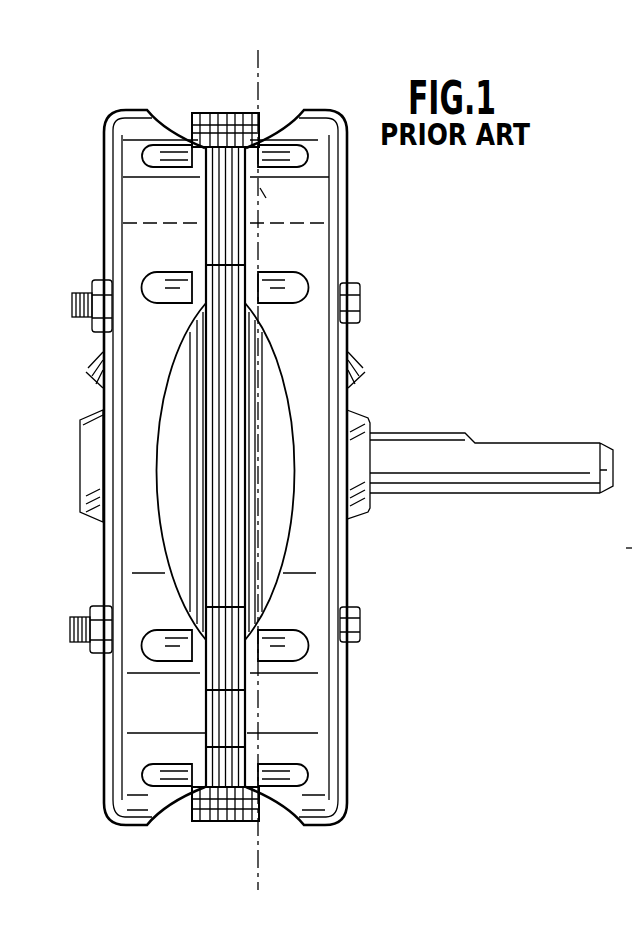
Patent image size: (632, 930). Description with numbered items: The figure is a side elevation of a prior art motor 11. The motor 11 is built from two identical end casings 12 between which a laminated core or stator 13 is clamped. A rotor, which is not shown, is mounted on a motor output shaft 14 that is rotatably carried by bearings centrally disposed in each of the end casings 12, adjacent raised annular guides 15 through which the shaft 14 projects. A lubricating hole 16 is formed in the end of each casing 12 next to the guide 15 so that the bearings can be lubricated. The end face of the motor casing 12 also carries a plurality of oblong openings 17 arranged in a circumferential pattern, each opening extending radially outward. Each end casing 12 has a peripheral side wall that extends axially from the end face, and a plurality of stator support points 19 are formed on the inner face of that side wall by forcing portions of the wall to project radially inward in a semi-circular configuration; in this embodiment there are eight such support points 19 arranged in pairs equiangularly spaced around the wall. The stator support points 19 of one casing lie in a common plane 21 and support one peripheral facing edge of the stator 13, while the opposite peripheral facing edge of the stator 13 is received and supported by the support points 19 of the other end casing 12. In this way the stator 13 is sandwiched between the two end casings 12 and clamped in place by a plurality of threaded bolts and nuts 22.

The prior art motor 11 is at (96, 118).
The end casing 12 is at (94, 184).
The laminated core or stator 13 is at (214, 114).
The motor output shaft 14 is at (514, 495).
The raised annular guide 15 is at (82, 428).
The lubricating hole 16 is at (100, 360).
The oblong opening 17 is at (631, 552).
The stator support point 19 is at (160, 150).
The plane of the stator support points 21 is at (266, 198).
The threaded bolts and nuts 22 is at (68, 302).